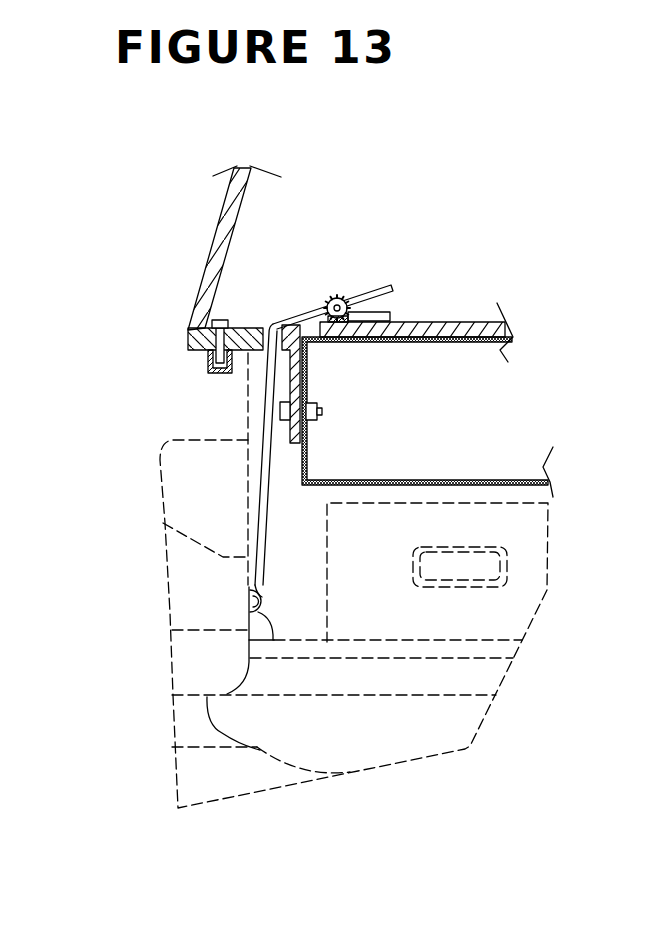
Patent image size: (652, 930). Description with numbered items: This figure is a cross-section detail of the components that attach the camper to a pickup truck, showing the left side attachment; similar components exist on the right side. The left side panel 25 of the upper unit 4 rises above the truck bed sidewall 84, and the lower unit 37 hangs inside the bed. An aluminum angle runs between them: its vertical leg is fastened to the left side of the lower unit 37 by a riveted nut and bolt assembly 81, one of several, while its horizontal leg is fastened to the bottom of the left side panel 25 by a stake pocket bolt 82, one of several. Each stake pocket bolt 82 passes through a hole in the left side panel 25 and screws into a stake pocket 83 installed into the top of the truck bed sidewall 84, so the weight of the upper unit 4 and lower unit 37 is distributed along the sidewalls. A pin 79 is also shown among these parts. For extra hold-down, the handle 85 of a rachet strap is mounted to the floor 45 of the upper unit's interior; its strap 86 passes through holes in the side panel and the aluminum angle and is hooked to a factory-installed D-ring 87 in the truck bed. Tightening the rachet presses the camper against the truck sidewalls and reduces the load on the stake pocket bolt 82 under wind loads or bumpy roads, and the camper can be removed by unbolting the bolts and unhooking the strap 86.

The upper unit 4 is at (200, 212).
The left side panel 25 is at (208, 282).
The bolt for stake pocket 82 is at (192, 344).
The truck bed sidewall 84 is at (207, 362).
The stake pocket 83 is at (292, 379).
The pin 79 is at (268, 378).
The riveted nut and bolt assembly 81 is at (255, 413).
The strap of rachet strap 86 is at (257, 553).
The D-ring 87 is at (274, 641).
The handle of rachet strap 85 is at (338, 300).
The floor 45 is at (457, 333).
The lower unit 37 is at (457, 480).